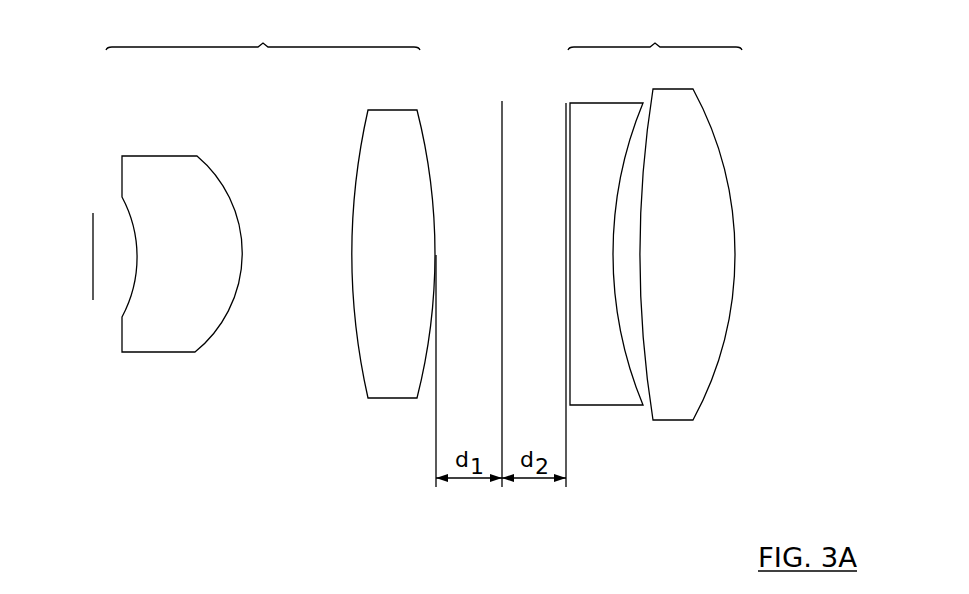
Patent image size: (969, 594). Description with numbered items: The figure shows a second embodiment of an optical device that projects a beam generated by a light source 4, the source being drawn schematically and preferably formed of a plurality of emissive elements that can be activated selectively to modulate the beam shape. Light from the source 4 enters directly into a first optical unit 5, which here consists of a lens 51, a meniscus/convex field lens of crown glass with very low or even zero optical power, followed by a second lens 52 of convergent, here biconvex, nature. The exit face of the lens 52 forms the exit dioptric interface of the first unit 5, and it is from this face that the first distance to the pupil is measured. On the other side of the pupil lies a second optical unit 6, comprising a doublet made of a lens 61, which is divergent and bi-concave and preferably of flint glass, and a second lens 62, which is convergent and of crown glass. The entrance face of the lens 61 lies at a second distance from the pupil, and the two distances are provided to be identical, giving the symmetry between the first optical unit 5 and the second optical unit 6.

The light source 4 is at (93, 300).
The first optical unit 5 is at (263, 30).
The second optical unit 6 is at (655, 30).
The lens 51 is at (190, 347).
The second lens 52 is at (395, 388).
The lens 61 is at (597, 398).
The second lens 62 is at (683, 417).